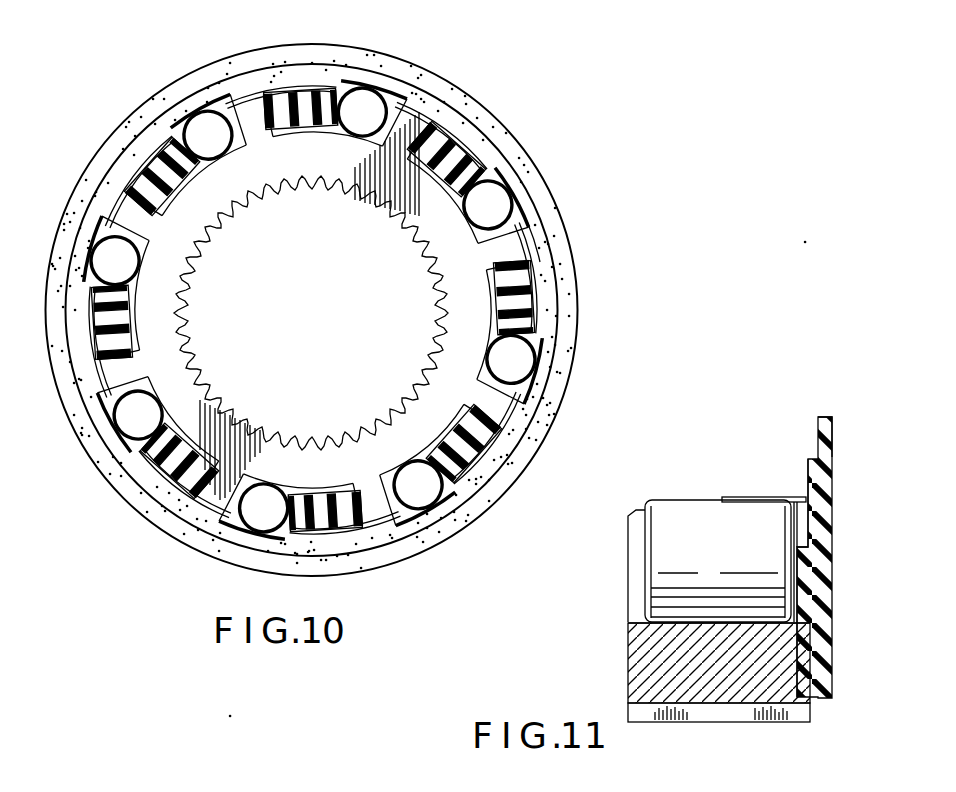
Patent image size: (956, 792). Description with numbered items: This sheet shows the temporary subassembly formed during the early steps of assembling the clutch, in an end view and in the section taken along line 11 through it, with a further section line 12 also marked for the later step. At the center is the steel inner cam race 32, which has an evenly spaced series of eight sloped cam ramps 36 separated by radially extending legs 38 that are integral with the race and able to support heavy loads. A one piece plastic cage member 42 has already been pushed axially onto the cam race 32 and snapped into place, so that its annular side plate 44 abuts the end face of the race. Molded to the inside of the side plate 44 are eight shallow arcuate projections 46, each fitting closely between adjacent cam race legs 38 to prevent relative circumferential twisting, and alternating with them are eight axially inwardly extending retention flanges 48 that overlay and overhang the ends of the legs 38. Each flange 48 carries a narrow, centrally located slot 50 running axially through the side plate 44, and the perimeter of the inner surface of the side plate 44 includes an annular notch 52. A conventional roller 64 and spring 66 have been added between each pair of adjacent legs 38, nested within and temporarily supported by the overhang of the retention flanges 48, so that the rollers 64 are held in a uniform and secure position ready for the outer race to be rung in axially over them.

In FIG. 10, the section line 11- 11 is at (358, 23).
In FIG. 10, the section line 12- 12 is at (236, 44).
In FIG. 10, the inner cam race 32 is at (417, 390).
In FIG. 11, the inner cam race 32 is at (715, 727).
In FIG. 10, the cam ramps 36 is at (432, 247).
In FIG. 11, the cam ramps 36 is at (637, 620).
In FIG. 10, the cam race legs 38 is at (418, 110).
In FIG. 11, the cam race legs 38 is at (632, 545).
In FIG. 10, the cage member 42 is at (497, 108).
In FIG. 11, the cage member 42 is at (825, 412).
In FIG. 10, the annular side plate 44 is at (537, 247).
In FIG. 11, the annular side plate 44 is at (823, 517).
In FIG. 10, the projections 46 is at (287, 133).
In FIG. 11, the projections 46 is at (800, 603).
In FIG. 10, the retention flanges 48 is at (432, 104).
In FIG. 11, the retention flanges 48 is at (742, 497).
In FIG. 11, the slot 50 is at (800, 500).
In FIG. 10, the annular notch 52 is at (455, 108).
In FIG. 11, the annular notch 52 is at (818, 435).
In FIG. 10, the roller 64 is at (360, 100).
In FIG. 11, the roller 64 is at (690, 525).
In FIG. 10, the spring 66 is at (472, 176).